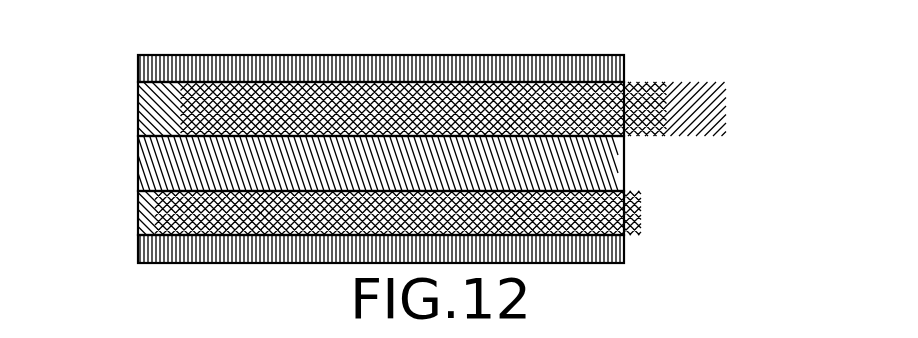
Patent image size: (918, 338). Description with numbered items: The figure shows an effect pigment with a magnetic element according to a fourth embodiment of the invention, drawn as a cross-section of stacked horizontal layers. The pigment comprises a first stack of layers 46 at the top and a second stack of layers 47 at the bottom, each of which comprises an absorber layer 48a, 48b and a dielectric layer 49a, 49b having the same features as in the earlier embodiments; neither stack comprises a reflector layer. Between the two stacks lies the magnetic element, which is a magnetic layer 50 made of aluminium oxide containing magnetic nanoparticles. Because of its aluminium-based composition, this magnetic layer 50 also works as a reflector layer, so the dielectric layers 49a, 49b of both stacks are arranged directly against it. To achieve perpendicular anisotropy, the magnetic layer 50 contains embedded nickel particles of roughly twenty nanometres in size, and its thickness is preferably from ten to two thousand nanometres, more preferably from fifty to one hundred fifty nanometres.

The first stack of layers 46 is at (120, 57).
The second stack of layers 47 is at (120, 193).
The absorber layer 48a is at (624, 67).
The absorber layer 48b is at (624, 245).
The dielectric layer 49a is at (624, 90).
The dielectric layer 49b is at (624, 210).
The magnetic layer 50 is at (138, 157).